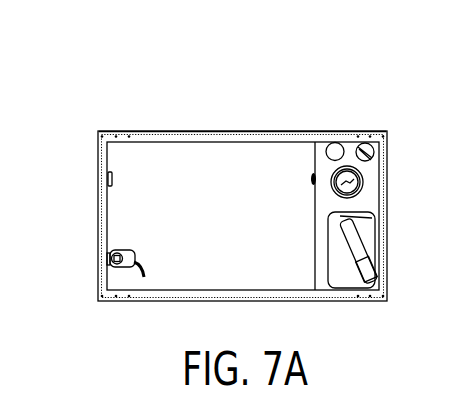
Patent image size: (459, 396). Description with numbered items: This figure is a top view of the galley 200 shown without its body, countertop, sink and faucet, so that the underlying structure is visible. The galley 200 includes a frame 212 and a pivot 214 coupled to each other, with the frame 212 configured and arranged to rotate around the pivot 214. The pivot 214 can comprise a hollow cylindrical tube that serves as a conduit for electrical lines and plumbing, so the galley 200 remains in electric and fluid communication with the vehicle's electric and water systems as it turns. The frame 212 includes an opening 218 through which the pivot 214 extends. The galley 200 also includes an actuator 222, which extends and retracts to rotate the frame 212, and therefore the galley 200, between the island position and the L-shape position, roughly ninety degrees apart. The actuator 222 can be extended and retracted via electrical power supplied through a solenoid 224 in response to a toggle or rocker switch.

The galley 200 is at (90, 96).
The frame 212 is at (293, 131).
The pivot 214 is at (360, 191).
The opening 218 is at (361, 170).
The actuator 222 is at (361, 251).
The solenoid 224 is at (361, 266).